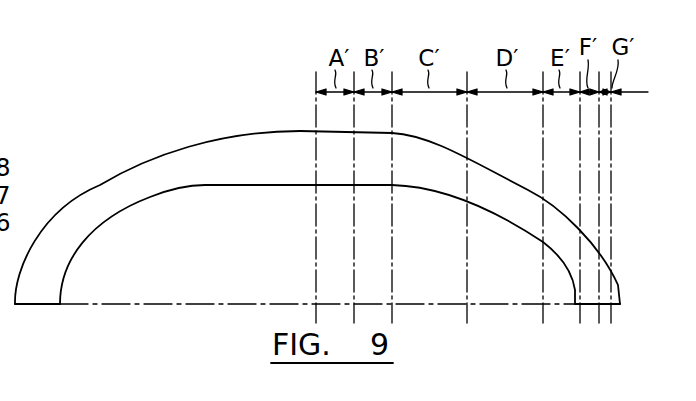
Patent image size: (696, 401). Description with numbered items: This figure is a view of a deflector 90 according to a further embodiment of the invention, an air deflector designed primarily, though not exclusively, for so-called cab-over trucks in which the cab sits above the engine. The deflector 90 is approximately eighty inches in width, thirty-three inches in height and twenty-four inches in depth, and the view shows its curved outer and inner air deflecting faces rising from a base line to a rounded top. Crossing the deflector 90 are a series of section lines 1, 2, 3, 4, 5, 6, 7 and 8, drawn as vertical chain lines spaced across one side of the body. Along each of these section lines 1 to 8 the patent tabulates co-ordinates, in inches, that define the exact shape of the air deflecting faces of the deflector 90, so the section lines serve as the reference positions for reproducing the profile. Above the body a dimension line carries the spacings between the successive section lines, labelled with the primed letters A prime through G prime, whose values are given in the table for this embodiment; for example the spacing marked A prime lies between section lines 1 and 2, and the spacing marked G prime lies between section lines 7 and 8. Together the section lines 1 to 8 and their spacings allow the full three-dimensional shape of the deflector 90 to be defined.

The deflector 90 is at (207, 168).
The section line 1 is at (315, 247).
The section line 2 is at (353, 243).
The section line 3 is at (391, 245).
The section line 4 is at (466, 238).
The section line 5 is at (542, 252).
The section line 6 is at (582, 268).
The section line 7 is at (598, 233).
The section line 8 is at (612, 217).